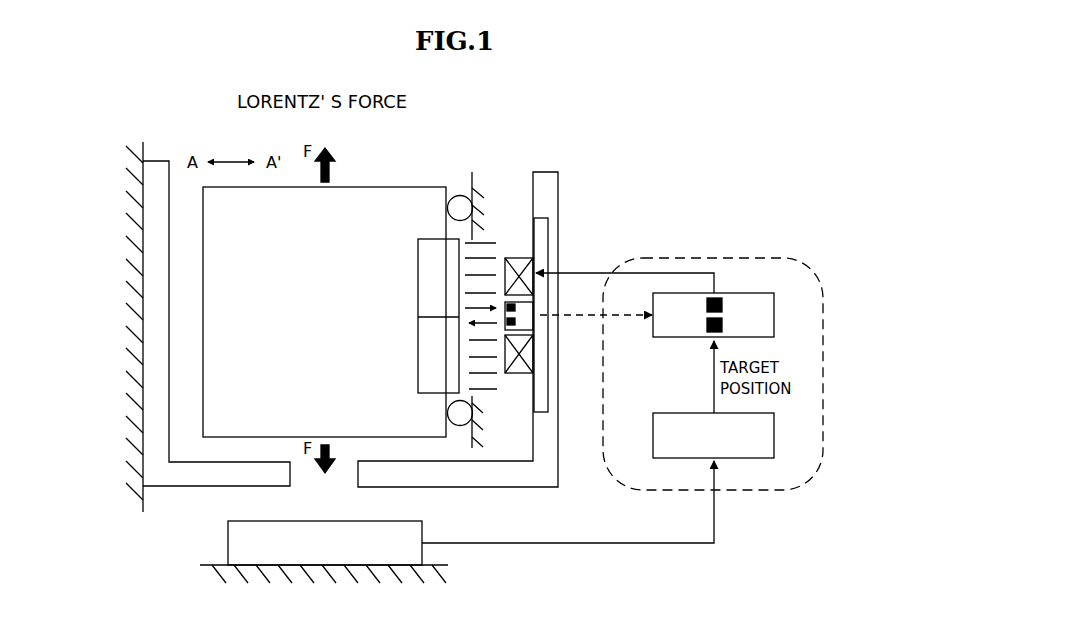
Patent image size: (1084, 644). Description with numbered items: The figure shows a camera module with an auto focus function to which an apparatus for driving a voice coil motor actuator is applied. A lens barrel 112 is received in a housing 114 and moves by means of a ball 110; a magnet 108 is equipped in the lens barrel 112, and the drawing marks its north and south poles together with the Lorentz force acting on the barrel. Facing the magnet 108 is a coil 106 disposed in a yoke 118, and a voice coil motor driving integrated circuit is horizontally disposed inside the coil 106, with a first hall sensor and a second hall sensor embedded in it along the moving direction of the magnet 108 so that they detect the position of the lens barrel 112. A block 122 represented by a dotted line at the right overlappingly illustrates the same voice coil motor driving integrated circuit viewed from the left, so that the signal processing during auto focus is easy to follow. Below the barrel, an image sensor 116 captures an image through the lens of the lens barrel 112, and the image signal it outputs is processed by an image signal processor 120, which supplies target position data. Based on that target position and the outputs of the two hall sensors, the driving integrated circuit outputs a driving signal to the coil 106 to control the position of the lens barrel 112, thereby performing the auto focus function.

The coil 106 is at (522, 373).
The magnet 108 is at (420, 238).
The ball 110 is at (459, 195).
The lens barrel 112 is at (203, 247).
The housing 114 is at (152, 488).
The image sensor 116 is at (228, 532).
The yoke 118 is at (543, 218).
The image signal processor 120 is at (774, 434).
The block 122 is at (658, 257).